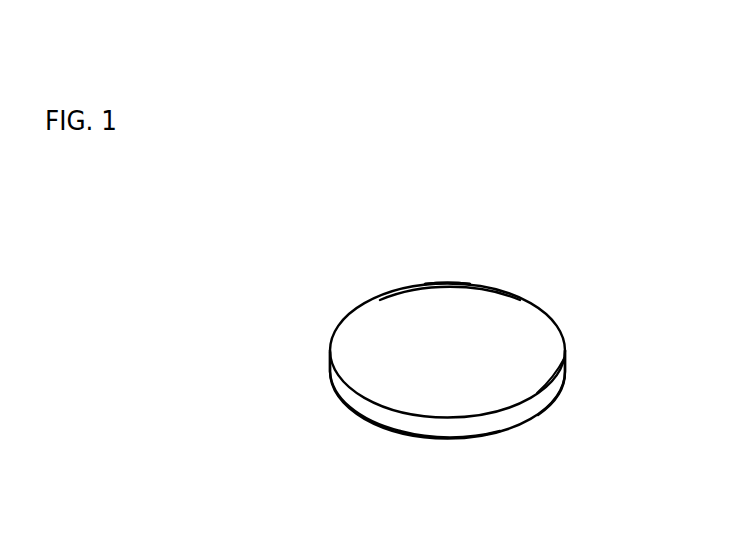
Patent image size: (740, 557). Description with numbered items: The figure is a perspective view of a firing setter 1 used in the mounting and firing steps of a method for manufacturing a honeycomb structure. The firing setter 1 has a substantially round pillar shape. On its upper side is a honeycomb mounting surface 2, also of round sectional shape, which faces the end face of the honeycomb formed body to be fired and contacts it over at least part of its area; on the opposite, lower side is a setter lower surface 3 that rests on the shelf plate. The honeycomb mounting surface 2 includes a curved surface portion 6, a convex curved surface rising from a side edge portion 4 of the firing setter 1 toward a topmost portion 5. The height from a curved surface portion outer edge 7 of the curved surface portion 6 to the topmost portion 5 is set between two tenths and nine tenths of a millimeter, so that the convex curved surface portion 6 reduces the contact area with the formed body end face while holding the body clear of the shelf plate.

The firing setter 1 is at (332, 281).
The honeycomb mounting surface 2 is at (467, 300).
The setter lower surface 3 is at (437, 440).
The side edge portion 4 is at (358, 403).
The topmost portion 5 is at (445, 337).
The curved surface portion 6 is at (447, 283).
The curved surface portion outer edge 7 is at (566, 357).